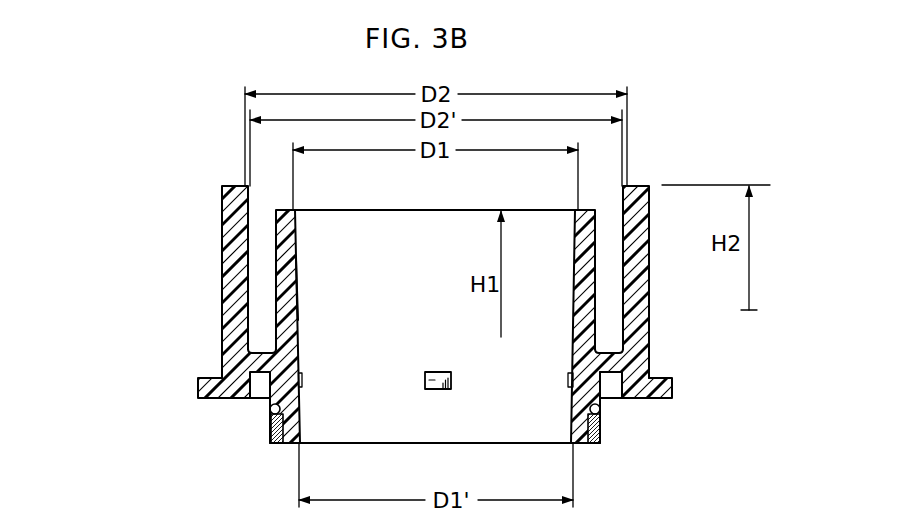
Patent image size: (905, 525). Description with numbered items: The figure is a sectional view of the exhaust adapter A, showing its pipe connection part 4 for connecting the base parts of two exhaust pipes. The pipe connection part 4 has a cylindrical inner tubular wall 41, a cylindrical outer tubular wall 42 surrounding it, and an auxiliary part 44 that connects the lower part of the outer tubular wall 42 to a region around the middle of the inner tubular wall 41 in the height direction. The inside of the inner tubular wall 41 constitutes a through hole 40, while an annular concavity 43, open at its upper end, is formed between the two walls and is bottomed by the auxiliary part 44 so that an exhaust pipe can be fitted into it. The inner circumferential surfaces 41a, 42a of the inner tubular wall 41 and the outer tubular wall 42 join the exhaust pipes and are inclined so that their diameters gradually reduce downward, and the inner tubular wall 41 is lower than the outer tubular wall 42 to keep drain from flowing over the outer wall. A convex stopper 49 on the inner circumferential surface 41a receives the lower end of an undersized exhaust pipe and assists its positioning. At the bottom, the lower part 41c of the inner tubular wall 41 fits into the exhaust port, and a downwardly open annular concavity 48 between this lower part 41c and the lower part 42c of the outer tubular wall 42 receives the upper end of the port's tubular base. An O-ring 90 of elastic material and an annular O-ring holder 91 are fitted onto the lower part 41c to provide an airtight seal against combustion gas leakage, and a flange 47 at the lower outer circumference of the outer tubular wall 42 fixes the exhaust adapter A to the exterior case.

The pipe connection part 4 is at (228, 162).
The exhaust adapter A is at (188, 101).
The through hole 40 is at (364, 245).
The inner tubular wall 41 is at (288, 236).
The inner circumferential surface 41a is at (296, 292).
The lower part of the inner tubular wall 41c is at (582, 445).
The outer tubular wall 42 is at (237, 190).
The inner circumferential surface of the outer tubular wall 42a is at (243, 256).
The lower part of the outer tubular wall 42c is at (638, 390).
The annular concavity 43 is at (260, 283).
The auxiliary part 44 is at (260, 356).
The flange 47 is at (215, 387).
The annular concavity 48 is at (605, 391).
The stopper 49 is at (428, 378).
The O-ring 90 is at (600, 415).
The O-ring holder 91 is at (598, 443).